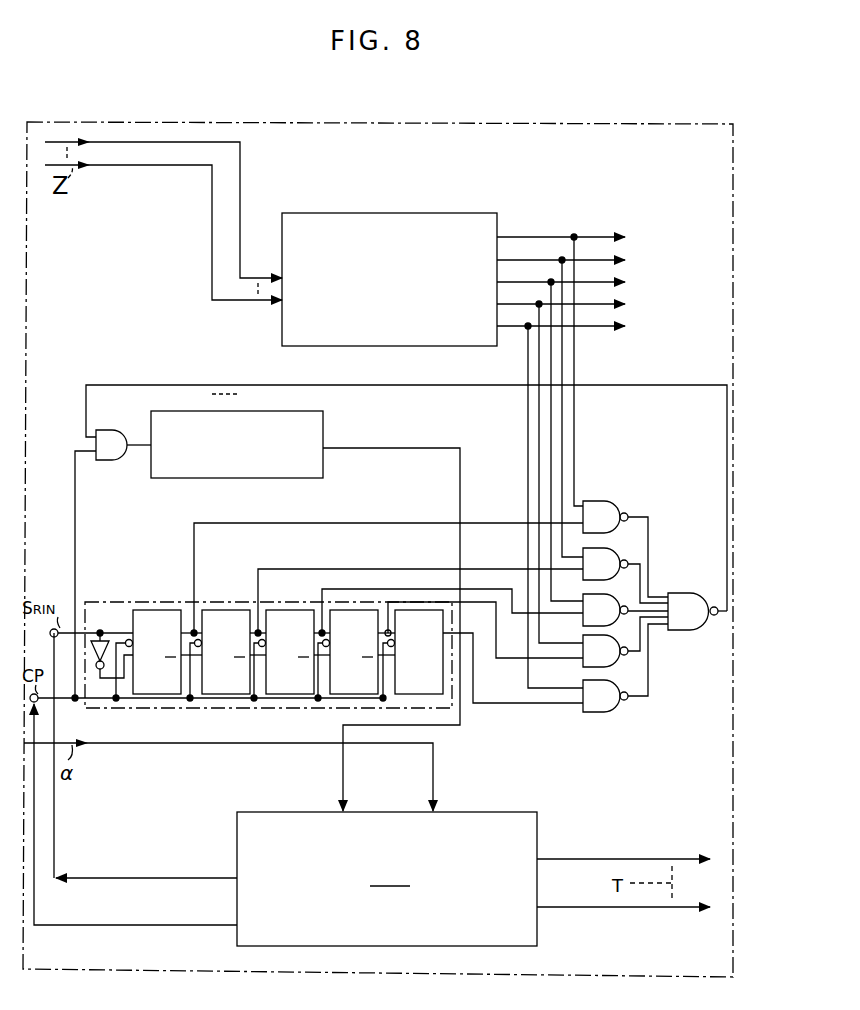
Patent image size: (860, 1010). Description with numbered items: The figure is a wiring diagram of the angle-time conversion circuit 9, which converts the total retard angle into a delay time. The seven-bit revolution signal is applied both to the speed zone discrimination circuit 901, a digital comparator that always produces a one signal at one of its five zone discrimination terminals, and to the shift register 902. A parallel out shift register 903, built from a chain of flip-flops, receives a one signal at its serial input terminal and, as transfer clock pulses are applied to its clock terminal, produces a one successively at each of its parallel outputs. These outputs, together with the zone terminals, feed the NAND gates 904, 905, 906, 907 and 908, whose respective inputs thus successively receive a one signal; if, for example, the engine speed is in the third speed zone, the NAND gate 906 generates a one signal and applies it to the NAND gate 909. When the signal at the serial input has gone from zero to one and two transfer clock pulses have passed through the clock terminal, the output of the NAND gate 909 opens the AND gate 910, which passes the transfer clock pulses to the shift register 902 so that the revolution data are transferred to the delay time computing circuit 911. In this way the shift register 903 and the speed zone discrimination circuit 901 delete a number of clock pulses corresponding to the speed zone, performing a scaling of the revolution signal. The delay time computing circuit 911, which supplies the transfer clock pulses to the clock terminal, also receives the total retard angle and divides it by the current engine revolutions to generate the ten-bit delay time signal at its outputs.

The angle-time conversion circuit 9 is at (548, 124).
The speed zone discrimination circuit 901 is at (424, 213).
The shift register 902 is at (323, 440).
The parallel out shift register 903 is at (104, 602).
The NAND gate 904 is at (600, 503).
The NAND gate 905 is at (632, 562).
The NAND gate 906 is at (630, 600).
The NAND gate 907 is at (630, 655).
The NAND gate 908 is at (630, 694).
The NAND gate 909 is at (708, 626).
The AND gate 910 is at (112, 430).
The delay time computing circuit 911 is at (460, 812).